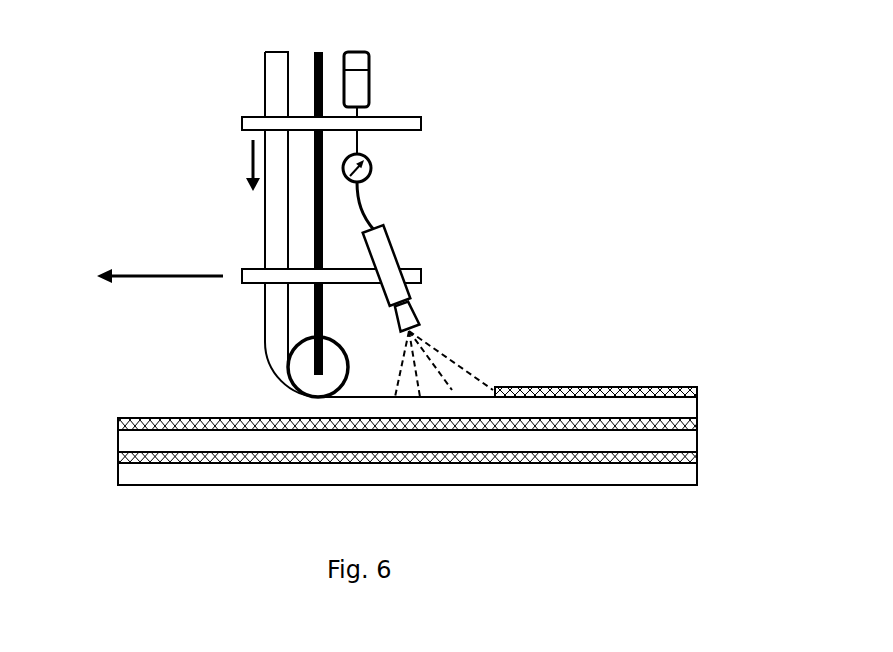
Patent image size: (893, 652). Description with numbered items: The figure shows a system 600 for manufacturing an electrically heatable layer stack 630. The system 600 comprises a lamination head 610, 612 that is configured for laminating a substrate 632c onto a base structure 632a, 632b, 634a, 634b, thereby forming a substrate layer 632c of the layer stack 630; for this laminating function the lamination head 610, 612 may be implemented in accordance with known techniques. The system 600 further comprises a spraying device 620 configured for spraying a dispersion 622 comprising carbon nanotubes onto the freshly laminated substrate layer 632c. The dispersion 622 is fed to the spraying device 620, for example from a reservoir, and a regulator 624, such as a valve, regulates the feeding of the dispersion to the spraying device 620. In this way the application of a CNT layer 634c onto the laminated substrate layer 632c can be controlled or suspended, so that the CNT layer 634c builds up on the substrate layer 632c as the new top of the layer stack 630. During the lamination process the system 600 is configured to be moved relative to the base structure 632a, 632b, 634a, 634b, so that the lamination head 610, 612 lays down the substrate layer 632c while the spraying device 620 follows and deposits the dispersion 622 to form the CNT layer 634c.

The system 600 is at (166, 65).
The lamination head 610 is at (421, 271).
The lamination head 612 is at (302, 377).
The spraying device 620 is at (387, 233).
The dispersion 622 is at (481, 350).
The regulator 624 is at (374, 168).
The electrically heatable layer stack 630 is at (640, 364).
The base structure layer 632a is at (118, 475).
The base structure layer 632b is at (118, 443).
The substrate layer 632c is at (264, 313).
The base structure layer 634a is at (699, 452).
The base structure layer 634b is at (699, 423).
The CNT layer 634c is at (699, 388).